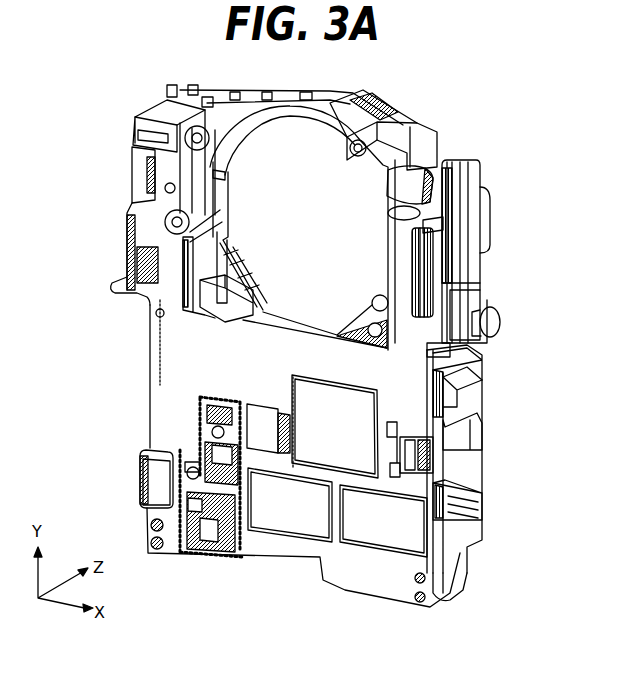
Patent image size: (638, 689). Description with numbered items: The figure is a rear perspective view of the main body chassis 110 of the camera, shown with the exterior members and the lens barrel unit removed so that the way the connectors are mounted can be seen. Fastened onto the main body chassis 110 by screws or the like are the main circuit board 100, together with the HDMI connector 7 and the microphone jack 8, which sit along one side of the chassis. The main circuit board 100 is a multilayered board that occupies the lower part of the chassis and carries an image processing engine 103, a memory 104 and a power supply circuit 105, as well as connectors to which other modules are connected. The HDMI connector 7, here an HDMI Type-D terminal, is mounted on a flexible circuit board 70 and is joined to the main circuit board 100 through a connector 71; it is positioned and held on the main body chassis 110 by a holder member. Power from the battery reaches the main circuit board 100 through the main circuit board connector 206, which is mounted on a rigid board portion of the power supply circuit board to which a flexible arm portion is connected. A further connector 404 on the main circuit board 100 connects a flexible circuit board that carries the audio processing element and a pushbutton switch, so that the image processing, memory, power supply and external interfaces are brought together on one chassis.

The main circuit board 100 is at (160, 384).
The main body chassis 110 is at (422, 128).
The flexible circuit board 70 is at (427, 167).
The connector 71 is at (418, 203).
The HDMI connector 7 is at (487, 244).
The microphone jack 8 is at (497, 314).
The image processing engine 103 is at (363, 420).
The connector 404 is at (433, 468).
The main circuit board connector 206 is at (157, 484).
The power supply circuit 105 is at (223, 518).
The memory 104 is at (373, 522).